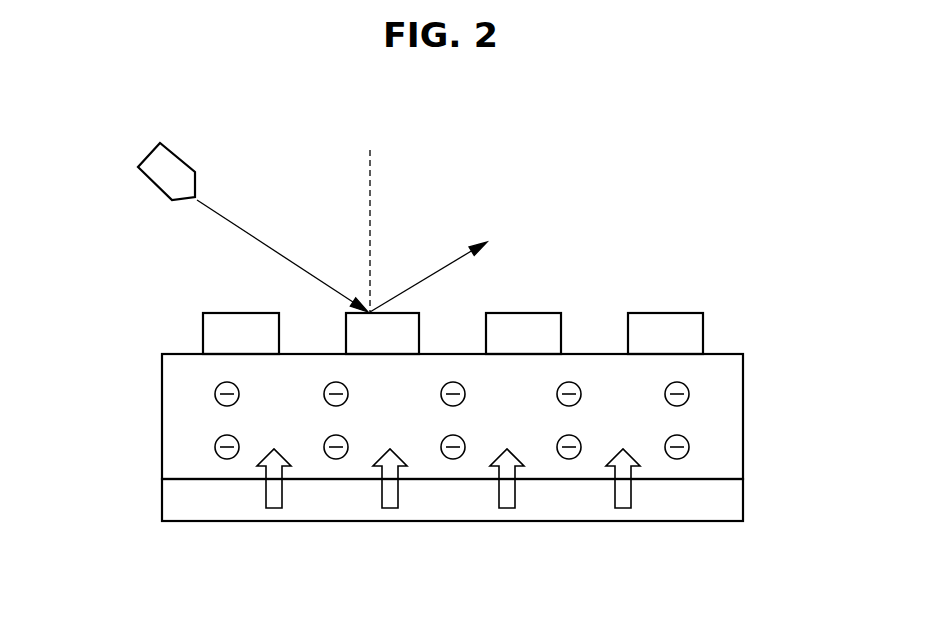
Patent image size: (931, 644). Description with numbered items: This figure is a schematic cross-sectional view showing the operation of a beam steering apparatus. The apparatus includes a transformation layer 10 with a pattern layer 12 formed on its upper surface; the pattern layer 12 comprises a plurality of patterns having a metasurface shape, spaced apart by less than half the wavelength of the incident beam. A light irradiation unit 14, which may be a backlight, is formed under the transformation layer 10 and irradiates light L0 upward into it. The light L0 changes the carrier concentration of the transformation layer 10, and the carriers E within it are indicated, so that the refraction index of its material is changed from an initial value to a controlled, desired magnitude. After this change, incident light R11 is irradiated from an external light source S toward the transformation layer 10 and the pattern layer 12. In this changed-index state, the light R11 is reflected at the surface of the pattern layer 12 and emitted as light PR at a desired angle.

The transformation layer 10 is at (730, 422).
The pattern layer 12 is at (698, 330).
The light irradiation unit 14 is at (730, 496).
The external light source S is at (178, 168).
The incident light R11 is at (283, 231).
The light PR is at (428, 276).
The electron E is at (215, 447).
The light L0 is at (389, 503).